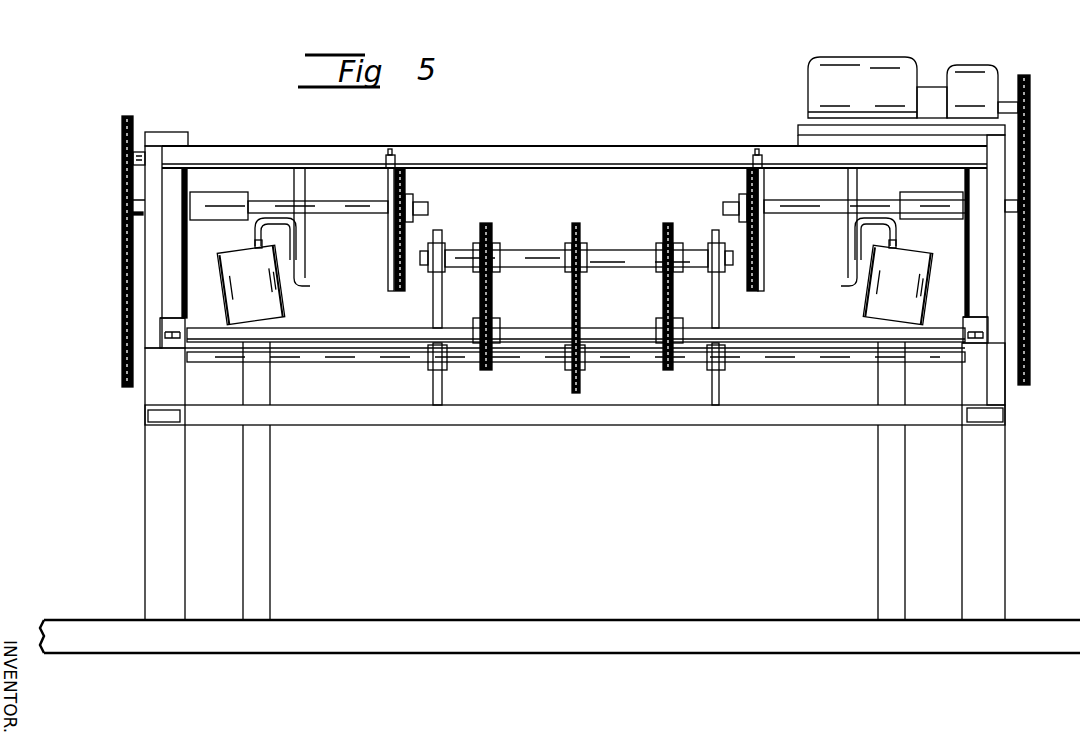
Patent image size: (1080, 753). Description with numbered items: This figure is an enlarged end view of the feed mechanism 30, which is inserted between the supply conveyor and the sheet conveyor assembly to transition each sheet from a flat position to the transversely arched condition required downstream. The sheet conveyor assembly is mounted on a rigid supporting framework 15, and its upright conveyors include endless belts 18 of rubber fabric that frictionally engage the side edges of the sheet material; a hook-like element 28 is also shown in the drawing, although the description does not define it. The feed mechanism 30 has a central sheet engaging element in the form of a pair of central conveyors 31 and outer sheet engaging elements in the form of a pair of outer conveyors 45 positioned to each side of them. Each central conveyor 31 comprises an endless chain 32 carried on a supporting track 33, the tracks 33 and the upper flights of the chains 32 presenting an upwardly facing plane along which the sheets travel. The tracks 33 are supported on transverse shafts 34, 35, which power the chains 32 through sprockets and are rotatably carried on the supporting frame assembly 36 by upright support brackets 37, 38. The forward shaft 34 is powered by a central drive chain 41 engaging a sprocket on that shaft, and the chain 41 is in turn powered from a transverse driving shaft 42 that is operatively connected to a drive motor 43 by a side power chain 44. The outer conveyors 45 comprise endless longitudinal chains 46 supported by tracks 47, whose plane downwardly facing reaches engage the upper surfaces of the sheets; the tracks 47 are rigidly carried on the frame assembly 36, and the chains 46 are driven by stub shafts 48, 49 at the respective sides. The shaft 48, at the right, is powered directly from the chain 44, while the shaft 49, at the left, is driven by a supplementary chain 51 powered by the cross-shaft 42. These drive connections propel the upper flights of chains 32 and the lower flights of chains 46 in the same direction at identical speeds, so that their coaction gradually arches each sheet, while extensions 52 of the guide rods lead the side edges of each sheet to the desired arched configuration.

The rigid supporting framework 15 is at (263, 472).
The endless belts 18 is at (574, 282).
The hook 28 is at (252, 240).
The feed mechanism 30 is at (99, 268).
The central conveyors 31 is at (645, 219).
The endless chain 32 is at (576, 317).
The supporting track 33 is at (494, 293).
The forward transverse shaft 34 is at (606, 256).
The transverse shaft 35 is at (397, 333).
The supporting frame assembly 36 is at (152, 461).
The upright support bracket 37 is at (443, 385).
The upright support bracket 38 is at (168, 379).
The central drive chain 41 is at (582, 284).
The transverse driving shaft 42 is at (618, 356).
The drive motor 43 is at (853, 67).
The side power chain 44 is at (1030, 251).
The outer conveyors 45 is at (433, 189).
The endless longitudinal chains 46 is at (393, 233).
The tracks 47 is at (390, 261).
The stub shaft 48 is at (782, 209).
The stub shaft 49 is at (368, 212).
The supplementary chain 51 is at (122, 193).
The extensions 52 is at (308, 285).